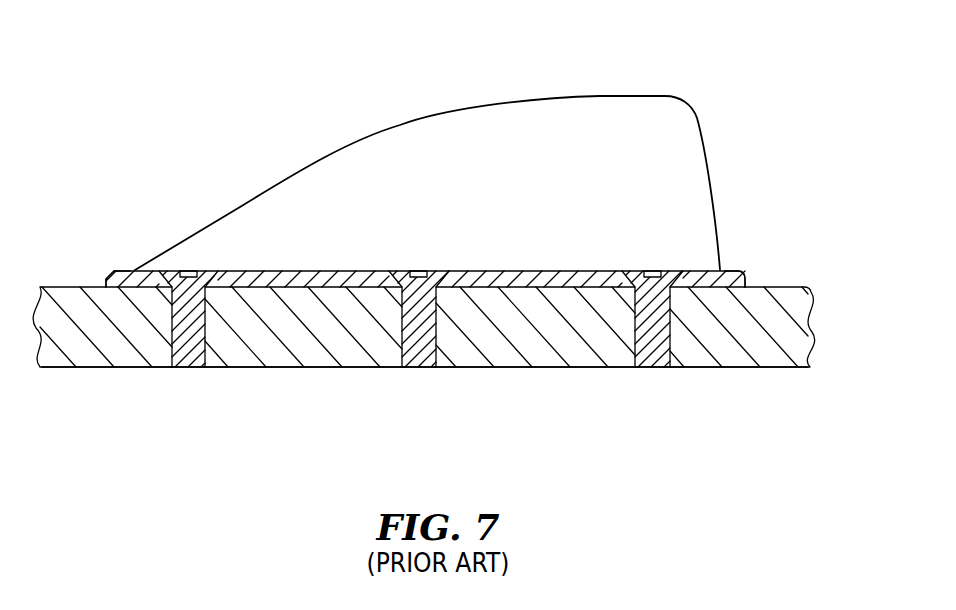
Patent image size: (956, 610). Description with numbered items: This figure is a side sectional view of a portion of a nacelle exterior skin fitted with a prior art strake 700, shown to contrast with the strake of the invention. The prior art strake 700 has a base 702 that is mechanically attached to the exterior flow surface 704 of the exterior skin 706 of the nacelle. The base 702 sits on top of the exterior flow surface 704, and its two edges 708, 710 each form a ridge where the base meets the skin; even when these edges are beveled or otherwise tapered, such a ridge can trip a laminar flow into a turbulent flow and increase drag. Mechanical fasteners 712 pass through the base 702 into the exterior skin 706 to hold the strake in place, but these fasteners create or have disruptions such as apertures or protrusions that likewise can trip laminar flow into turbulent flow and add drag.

The prior art strake 700 is at (705, 86).
The base 702 is at (258, 262).
The exterior flow surface 704 is at (786, 288).
The exterior skin 706 is at (767, 372).
The edge 708 is at (112, 272).
The edge 710 is at (745, 283).
The mechanical fasteners 712 is at (190, 368).